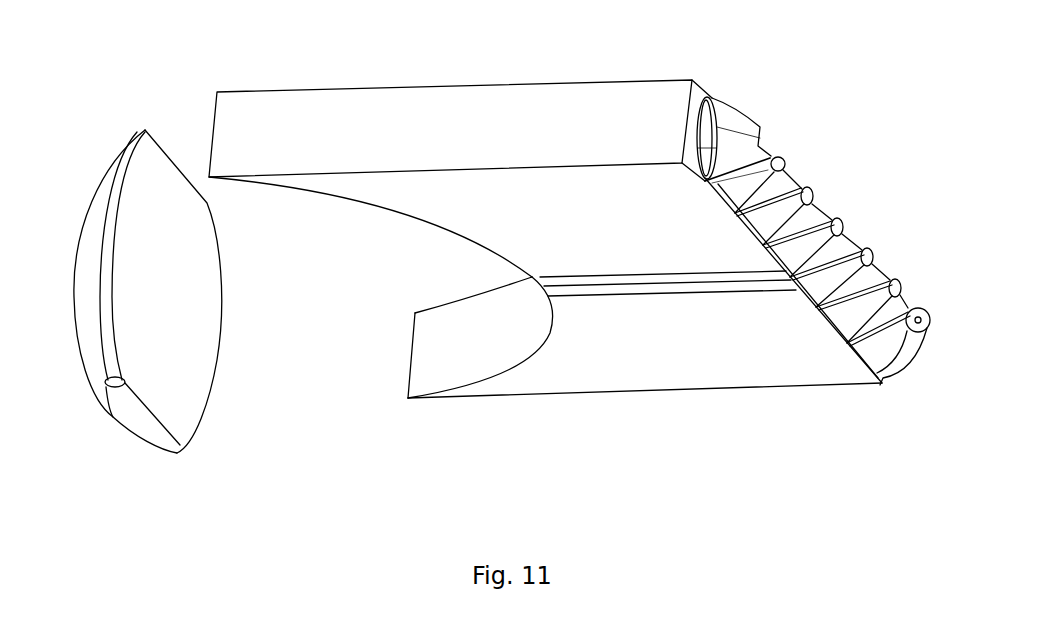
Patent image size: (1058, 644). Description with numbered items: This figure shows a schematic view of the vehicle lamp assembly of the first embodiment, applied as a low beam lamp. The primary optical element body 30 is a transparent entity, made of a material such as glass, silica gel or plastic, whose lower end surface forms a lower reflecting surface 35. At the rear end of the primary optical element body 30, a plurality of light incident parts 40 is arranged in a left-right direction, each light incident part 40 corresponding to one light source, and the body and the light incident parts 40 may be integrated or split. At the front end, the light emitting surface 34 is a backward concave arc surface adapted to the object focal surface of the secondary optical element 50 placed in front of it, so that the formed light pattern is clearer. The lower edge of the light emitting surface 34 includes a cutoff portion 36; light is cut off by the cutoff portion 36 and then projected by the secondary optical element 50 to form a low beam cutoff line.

The primary optical element body 30 is at (600, 80).
The light emitting surface 34 is at (470, 340).
The lower reflecting surface 35 is at (702, 347).
The cutoff portion 36 is at (537, 353).
The light incident parts 40 is at (787, 202).
The secondary optical element 50 is at (175, 390).